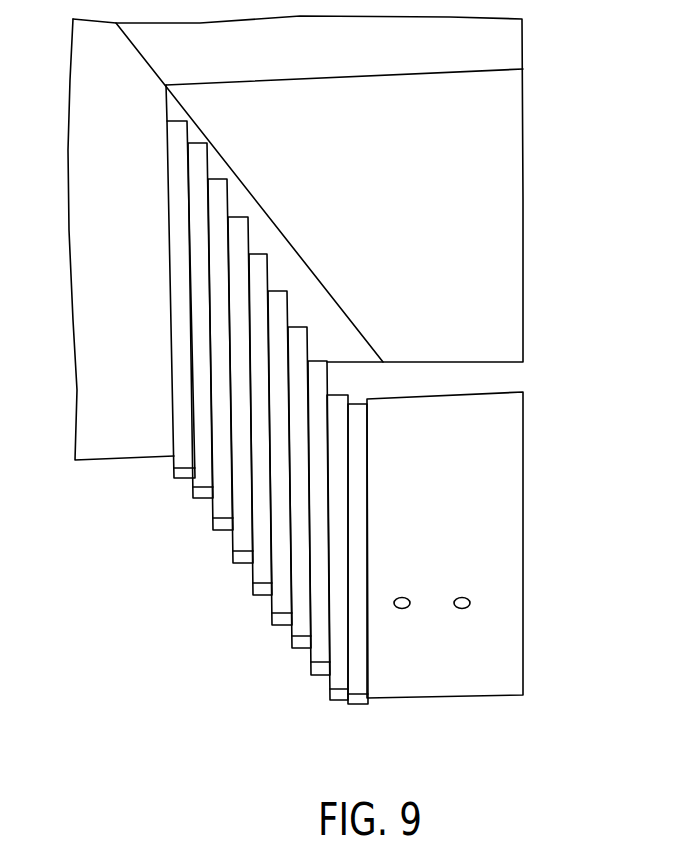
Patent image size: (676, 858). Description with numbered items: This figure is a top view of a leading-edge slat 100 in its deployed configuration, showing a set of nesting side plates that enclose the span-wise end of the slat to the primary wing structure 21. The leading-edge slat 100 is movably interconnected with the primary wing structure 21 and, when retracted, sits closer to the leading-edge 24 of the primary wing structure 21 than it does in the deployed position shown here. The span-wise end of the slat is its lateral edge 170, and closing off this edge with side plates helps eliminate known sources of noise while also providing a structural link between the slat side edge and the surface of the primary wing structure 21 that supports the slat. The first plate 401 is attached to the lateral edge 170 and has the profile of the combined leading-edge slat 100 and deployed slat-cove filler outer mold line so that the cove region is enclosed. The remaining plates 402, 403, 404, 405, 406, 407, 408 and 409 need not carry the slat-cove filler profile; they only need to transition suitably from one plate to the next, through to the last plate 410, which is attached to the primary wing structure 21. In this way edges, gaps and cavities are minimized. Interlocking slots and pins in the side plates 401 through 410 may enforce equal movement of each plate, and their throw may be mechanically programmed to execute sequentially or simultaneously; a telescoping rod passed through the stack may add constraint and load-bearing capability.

The primary wing structure 21 is at (507, 98).
The leading-edge 24 is at (472, 347).
The leading-edge slat 100 is at (500, 687).
The lateral edge 170 is at (362, 527).
The first plate 401 is at (362, 700).
The side plate 402 is at (347, 697).
The side plate 403 is at (338, 694).
The side plate 404 is at (318, 668).
The side plate 405 is at (297, 640).
The side plate 406 is at (257, 589).
The side plate 407 is at (237, 557).
The side plate 408 is at (215, 527).
The side plate 409 is at (197, 492).
The last plate 410 is at (175, 471).